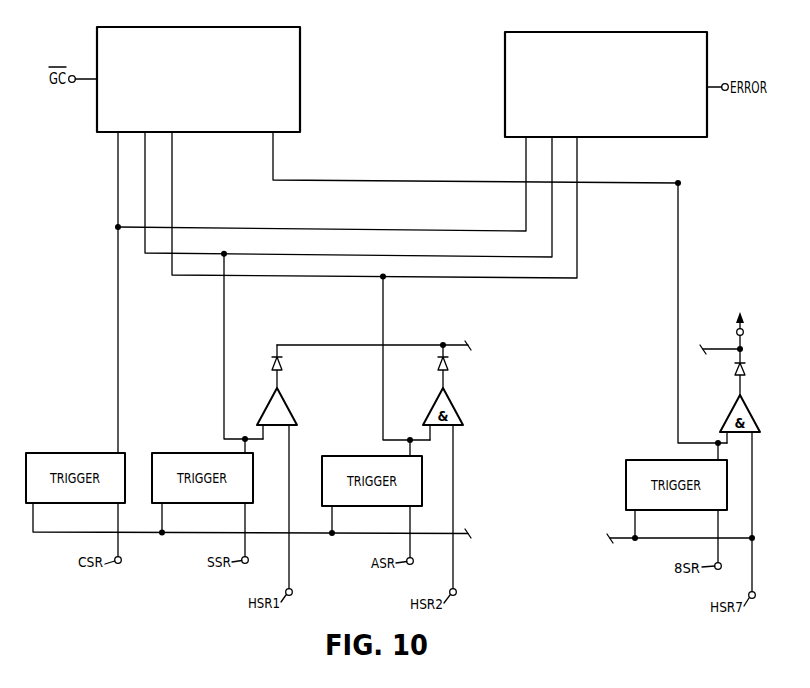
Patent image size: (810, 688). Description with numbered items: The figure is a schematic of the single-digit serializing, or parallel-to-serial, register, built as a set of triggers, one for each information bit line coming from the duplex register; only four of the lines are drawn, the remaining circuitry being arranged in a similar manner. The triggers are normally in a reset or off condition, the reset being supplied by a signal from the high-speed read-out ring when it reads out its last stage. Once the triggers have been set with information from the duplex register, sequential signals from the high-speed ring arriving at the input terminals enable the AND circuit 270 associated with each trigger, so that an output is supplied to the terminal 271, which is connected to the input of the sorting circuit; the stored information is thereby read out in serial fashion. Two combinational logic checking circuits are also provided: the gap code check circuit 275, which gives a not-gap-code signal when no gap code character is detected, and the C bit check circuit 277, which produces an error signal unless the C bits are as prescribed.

The gap code check circuit 275 is at (300, 78).
The C bit check circuit 277 is at (505, 82).
The AND circuit 270 is at (290, 404).
The terminal 271 is at (743, 332).